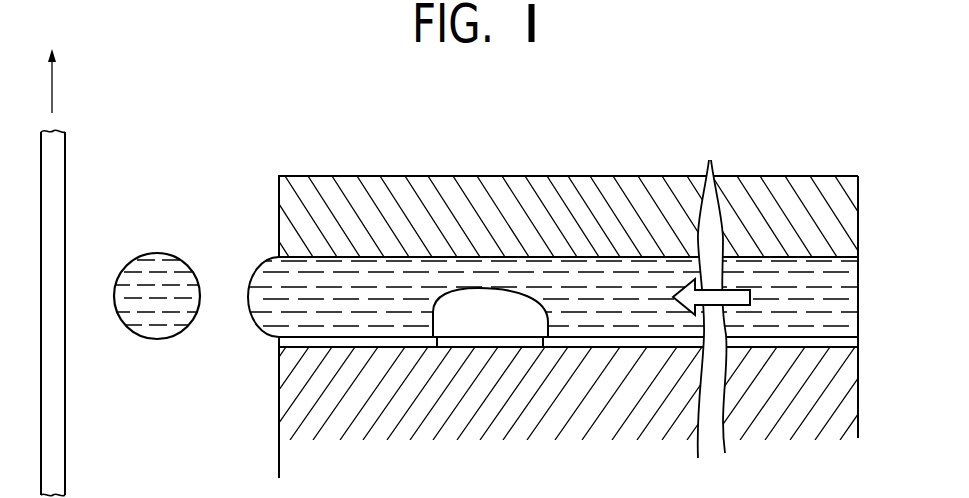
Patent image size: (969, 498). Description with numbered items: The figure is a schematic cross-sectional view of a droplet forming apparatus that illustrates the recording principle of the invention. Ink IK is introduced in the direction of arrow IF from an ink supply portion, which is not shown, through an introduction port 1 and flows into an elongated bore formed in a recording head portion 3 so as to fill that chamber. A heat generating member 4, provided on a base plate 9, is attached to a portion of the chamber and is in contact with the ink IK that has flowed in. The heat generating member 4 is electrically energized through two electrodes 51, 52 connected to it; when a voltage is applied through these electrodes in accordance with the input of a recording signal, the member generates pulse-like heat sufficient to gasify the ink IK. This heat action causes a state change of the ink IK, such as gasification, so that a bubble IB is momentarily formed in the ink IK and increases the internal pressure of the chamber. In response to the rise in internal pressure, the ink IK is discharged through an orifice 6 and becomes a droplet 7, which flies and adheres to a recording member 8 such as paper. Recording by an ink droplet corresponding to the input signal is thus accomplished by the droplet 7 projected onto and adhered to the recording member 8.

The introduction port 1 is at (858, 277).
The recording head portion 3 is at (524, 166).
The heat generating member 4 is at (490, 340).
The electrode 51 is at (365, 343).
The electrode 52 is at (647, 343).
The orifice 6 is at (275, 274).
The droplet 7 is at (160, 255).
The recording member 8 is at (66, 157).
The base plate 9 is at (576, 408).
The bubble IB is at (485, 298).
The ink IK is at (578, 272).
The direction of ink introduction IF is at (711, 296).